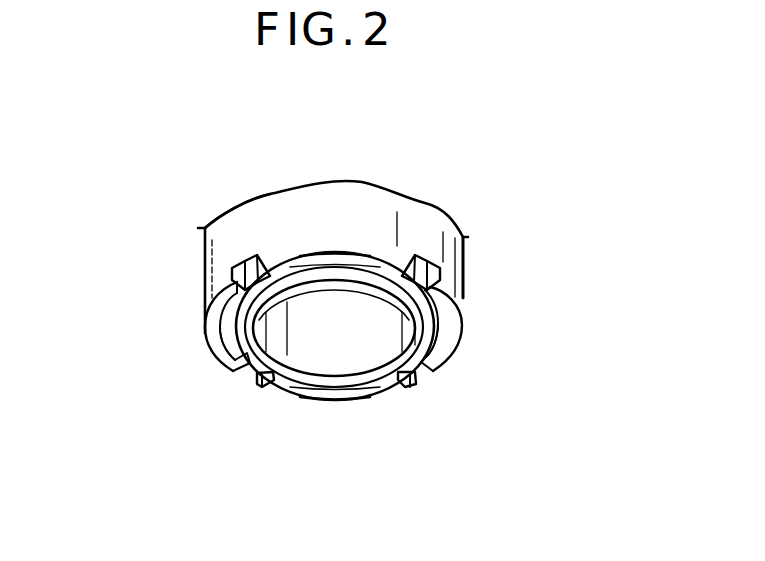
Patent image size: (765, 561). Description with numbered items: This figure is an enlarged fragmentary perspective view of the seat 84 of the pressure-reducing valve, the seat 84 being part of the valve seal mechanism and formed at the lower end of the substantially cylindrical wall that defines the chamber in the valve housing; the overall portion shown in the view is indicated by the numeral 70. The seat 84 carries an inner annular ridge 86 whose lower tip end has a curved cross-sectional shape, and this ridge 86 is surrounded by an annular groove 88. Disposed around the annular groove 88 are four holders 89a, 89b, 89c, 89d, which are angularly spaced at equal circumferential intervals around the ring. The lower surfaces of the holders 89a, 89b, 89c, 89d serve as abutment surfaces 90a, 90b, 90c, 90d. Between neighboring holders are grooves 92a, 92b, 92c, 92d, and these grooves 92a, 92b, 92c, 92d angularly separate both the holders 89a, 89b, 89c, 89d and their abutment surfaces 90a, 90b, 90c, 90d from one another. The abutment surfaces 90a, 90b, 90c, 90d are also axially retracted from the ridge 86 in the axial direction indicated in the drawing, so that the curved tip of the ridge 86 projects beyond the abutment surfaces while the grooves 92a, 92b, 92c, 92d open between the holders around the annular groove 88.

The retainer assembly 70 is at (500, 169).
The seat 84 is at (476, 250).
The inner annular ridge 86 is at (378, 392).
The annular groove 88 is at (218, 357).
The holder 89a is at (208, 302).
The holder 89b is at (348, 254).
The holder 89c is at (463, 293).
The holder 89d is at (353, 400).
The abutment surface 90a is at (218, 335).
The abutment surface 90b is at (310, 258).
The abutment surface 90c is at (450, 323).
The abutment surface 90d is at (313, 395).
The groove 92a is at (238, 258).
The groove 92b is at (430, 258).
The groove 92c is at (428, 373).
The groove 92d is at (248, 370).